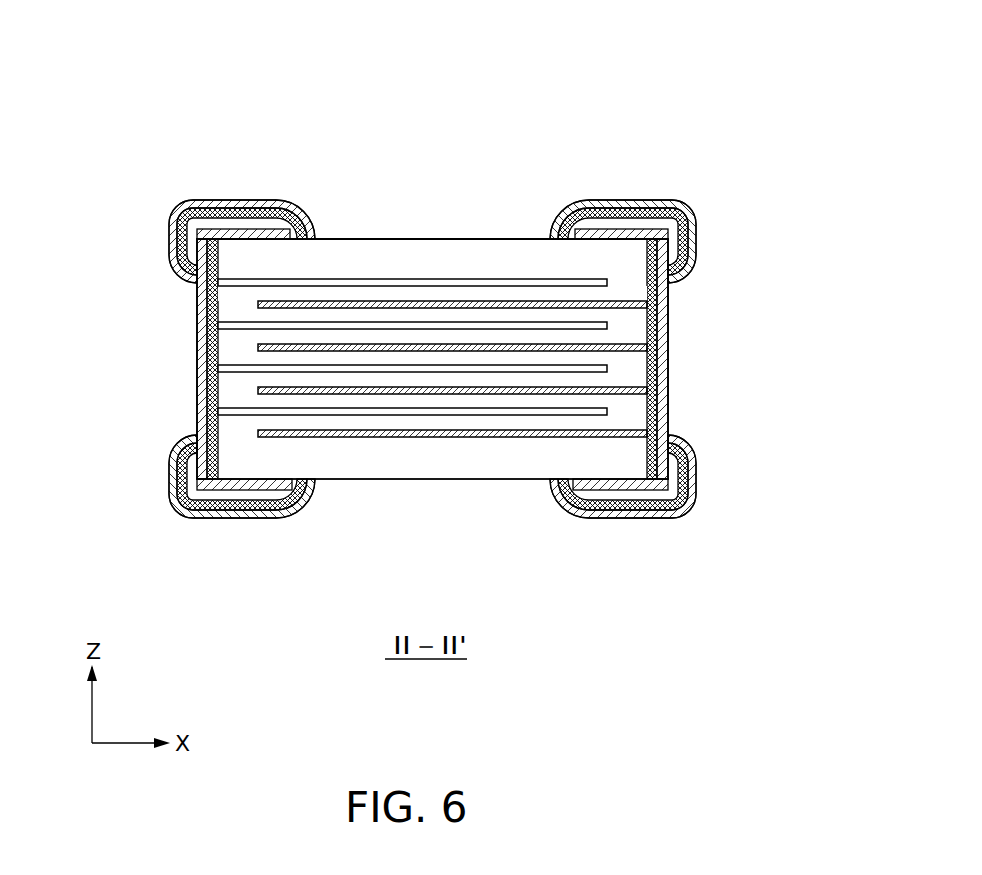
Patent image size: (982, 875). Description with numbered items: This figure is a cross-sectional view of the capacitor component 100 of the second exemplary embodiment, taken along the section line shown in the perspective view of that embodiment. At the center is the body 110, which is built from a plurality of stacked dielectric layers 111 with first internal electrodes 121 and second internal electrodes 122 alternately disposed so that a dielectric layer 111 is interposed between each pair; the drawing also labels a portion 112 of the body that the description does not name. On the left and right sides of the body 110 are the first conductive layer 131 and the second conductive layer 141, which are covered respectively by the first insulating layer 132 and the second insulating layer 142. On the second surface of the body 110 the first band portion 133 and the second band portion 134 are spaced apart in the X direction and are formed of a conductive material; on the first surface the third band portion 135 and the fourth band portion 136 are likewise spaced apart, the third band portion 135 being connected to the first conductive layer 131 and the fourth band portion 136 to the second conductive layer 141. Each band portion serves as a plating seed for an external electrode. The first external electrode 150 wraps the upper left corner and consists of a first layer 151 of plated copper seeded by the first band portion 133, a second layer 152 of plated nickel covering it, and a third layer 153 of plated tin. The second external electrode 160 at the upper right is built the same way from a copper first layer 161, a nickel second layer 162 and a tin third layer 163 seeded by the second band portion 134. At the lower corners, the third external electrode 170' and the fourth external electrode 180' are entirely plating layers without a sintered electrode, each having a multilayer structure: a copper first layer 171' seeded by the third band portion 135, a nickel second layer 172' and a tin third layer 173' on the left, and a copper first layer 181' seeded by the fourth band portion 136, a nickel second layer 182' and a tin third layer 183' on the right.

The capacitor component 100 is at (452, 42).
The body 110 is at (437, 303).
The dielectric layer 111 is at (236, 294).
The cover portion 112 is at (467, 243).
The first internal electrode 121 is at (222, 283).
The second internal electrode 122 is at (262, 307).
The first conductive layer 131 is at (203, 382).
The first insulating layer 132 is at (199, 410).
The first band portion 133 is at (187, 204).
The second band portion 134 is at (590, 206).
The third band portion 135 is at (252, 511).
The fourth band portion 136 is at (659, 495).
The second conductive layer 141 is at (666, 325).
The second insulating layer 142 is at (656, 375).
The first external electrode 150 is at (233, 187).
The first layer 151 is at (238, 231).
The second layer 152 is at (278, 213).
The third layer 153 is at (303, 206).
The second external electrode 160 is at (620, 187).
The first layer 161 is at (600, 231).
The second layer 162 is at (640, 213).
The third layer 163 is at (683, 206).
The third external electrode 170' is at (228, 530).
The first layer 171' is at (207, 530).
The second layer 172' is at (239, 512).
The third layer 173' is at (242, 508).
The fourth external electrode 180' is at (654, 530).
The first layer 181' is at (605, 530).
The second layer 182' is at (623, 512).
The third layer 183' is at (623, 508).